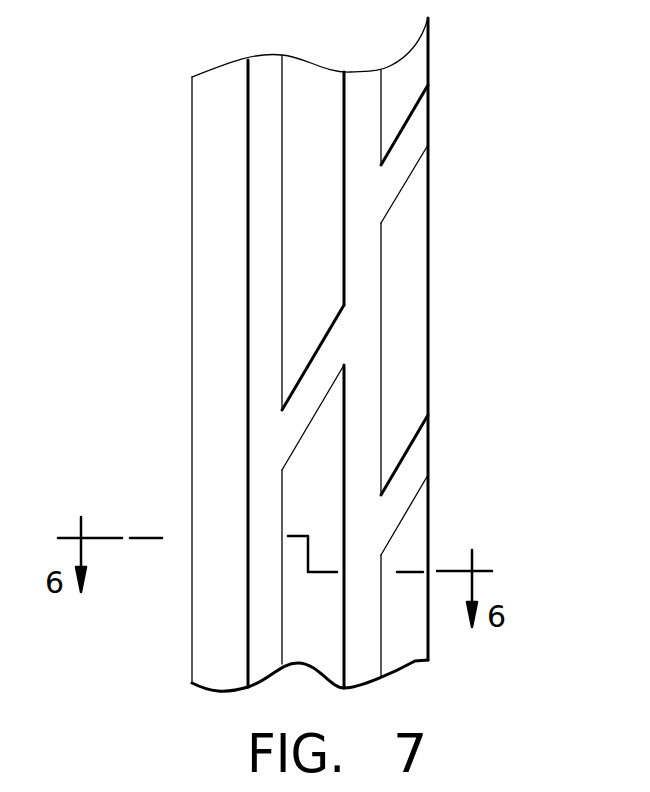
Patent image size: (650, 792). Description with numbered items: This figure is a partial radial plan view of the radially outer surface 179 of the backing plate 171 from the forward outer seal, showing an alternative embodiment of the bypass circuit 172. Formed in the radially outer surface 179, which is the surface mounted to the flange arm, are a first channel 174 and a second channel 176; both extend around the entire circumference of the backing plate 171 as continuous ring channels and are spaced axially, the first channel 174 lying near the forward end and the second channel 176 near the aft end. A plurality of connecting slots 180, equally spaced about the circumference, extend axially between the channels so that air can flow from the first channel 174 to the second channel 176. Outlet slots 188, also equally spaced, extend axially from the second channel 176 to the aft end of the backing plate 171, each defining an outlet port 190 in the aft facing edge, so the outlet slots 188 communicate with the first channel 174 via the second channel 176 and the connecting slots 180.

The backing plate 171 is at (218, 88).
The first channel 174 is at (265, 330).
The radially outer surface 179 is at (338, 196).
The connecting slots 180 is at (313, 390).
The second channel 176 is at (362, 297).
The bypass circuit 172 is at (402, 392).
The outlet port 190 is at (428, 112).
The outlet slots 188 is at (405, 157).